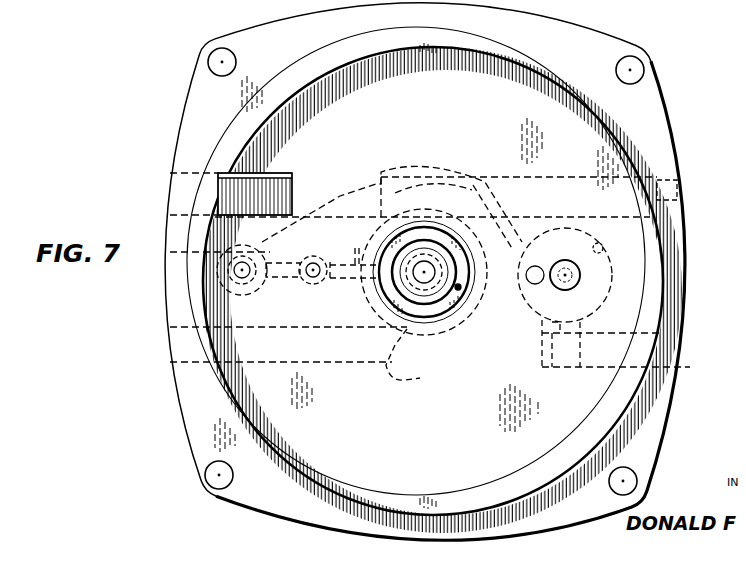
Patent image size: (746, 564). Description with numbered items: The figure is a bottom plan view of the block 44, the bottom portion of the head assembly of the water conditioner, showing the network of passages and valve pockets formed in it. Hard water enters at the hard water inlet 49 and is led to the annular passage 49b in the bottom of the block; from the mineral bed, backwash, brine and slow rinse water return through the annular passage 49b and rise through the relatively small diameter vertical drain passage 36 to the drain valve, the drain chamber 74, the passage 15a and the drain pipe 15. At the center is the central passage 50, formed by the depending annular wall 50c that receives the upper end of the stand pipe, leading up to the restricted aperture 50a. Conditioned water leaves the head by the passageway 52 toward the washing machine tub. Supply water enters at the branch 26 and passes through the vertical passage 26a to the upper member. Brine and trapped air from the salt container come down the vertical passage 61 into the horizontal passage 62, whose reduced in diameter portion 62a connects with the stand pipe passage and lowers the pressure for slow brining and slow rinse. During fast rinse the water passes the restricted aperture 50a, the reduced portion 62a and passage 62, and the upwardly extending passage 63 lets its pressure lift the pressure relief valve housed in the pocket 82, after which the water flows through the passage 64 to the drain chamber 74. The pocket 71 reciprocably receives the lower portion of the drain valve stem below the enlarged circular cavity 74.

The block 44 is at (182, 125).
The hard water inlet 49 is at (218, 190).
The annular passage 49b is at (278, 190).
The passage 64 is at (343, 199).
The upwardly extending passage 63 is at (247, 295).
The horizontal passage 62 is at (230, 283).
The pocket 82 is at (266, 279).
The vertical passage 61 is at (312, 279).
The reduced in diameter portion 62a is at (358, 258).
The central passage 50 is at (459, 289).
The restricted aperture 50a is at (428, 280).
The depending annular wall 50c is at (383, 296).
The branch 26 is at (218, 347).
The vertical passage 26a is at (421, 378).
The vertical drain passage 36 is at (526, 275).
The enlarged circular cavity 74 is at (603, 248).
The pocket 71 is at (582, 277).
The passage 15a is at (551, 322).
The drain pipe 15 is at (664, 352).
The passageway 52 is at (678, 200).